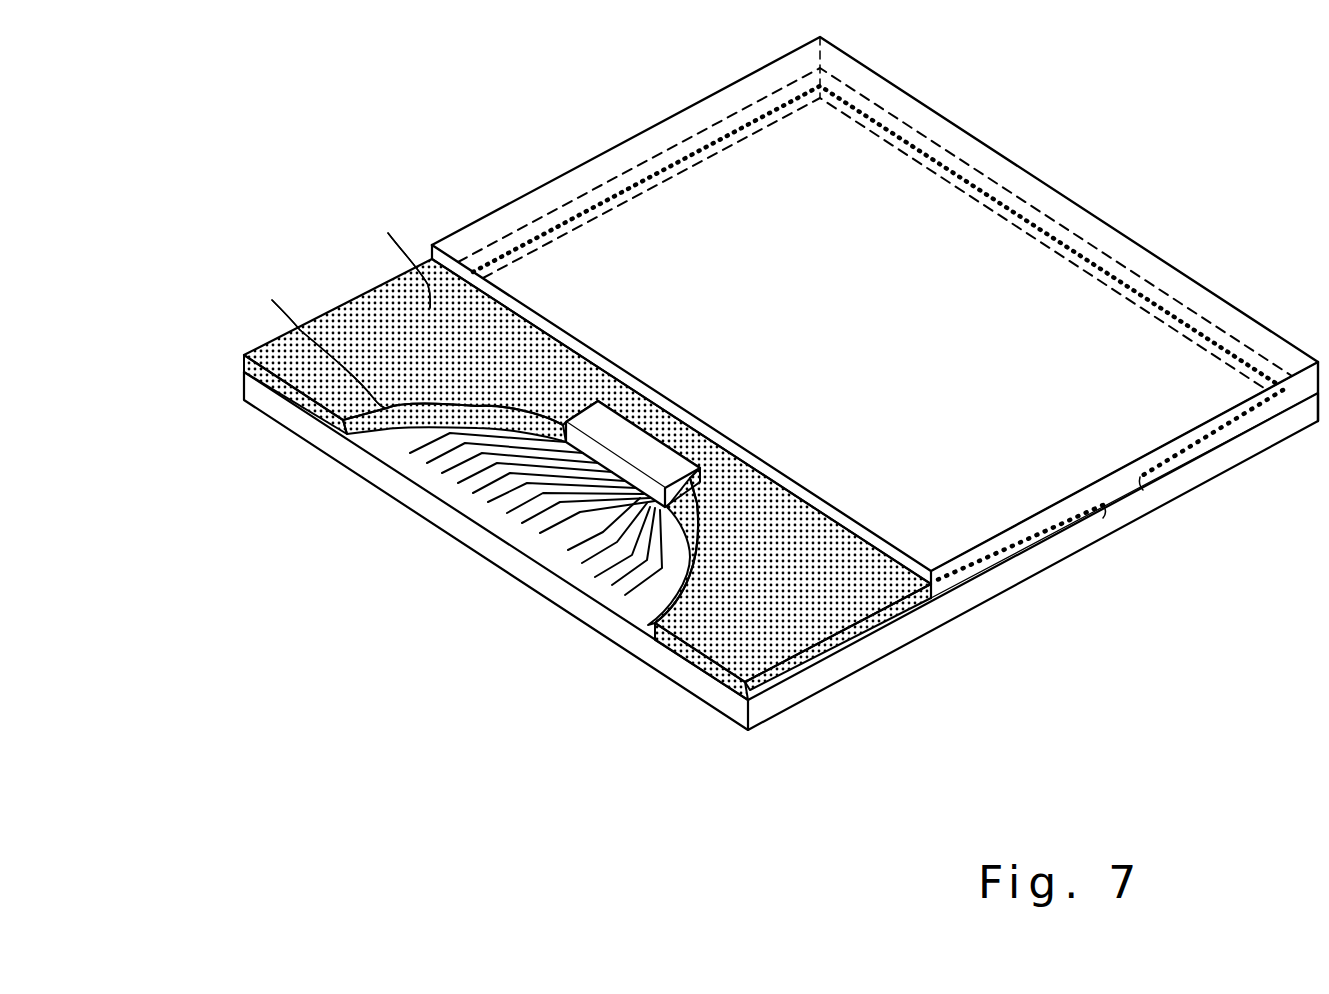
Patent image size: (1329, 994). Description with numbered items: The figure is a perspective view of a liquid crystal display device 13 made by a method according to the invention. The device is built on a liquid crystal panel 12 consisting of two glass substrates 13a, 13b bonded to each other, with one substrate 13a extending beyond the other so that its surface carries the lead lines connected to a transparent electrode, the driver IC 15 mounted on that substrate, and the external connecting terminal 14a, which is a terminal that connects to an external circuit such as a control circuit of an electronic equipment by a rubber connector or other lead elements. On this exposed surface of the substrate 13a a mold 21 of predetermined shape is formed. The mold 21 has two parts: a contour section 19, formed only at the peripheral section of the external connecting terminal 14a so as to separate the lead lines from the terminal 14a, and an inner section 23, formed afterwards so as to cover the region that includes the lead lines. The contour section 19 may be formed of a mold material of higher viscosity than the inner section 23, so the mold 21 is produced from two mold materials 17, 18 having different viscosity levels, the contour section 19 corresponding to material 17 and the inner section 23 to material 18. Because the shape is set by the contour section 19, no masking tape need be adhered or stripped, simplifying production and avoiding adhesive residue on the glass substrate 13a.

The liquid crystal panel 12 is at (1152, 255).
The liquid crystal display device 13 is at (596, 103).
The glass substrate 13a is at (1197, 470).
The glass substrate 13b is at (985, 158).
The external connecting terminal 14a is at (574, 552).
The driver IC 15 is at (652, 452).
The mold material 17 is at (298, 354).
The mold material 18 is at (377, 270).
The contour section 19 is at (298, 336).
The mold 21 is at (385, 182).
The inner section 23 is at (377, 253).